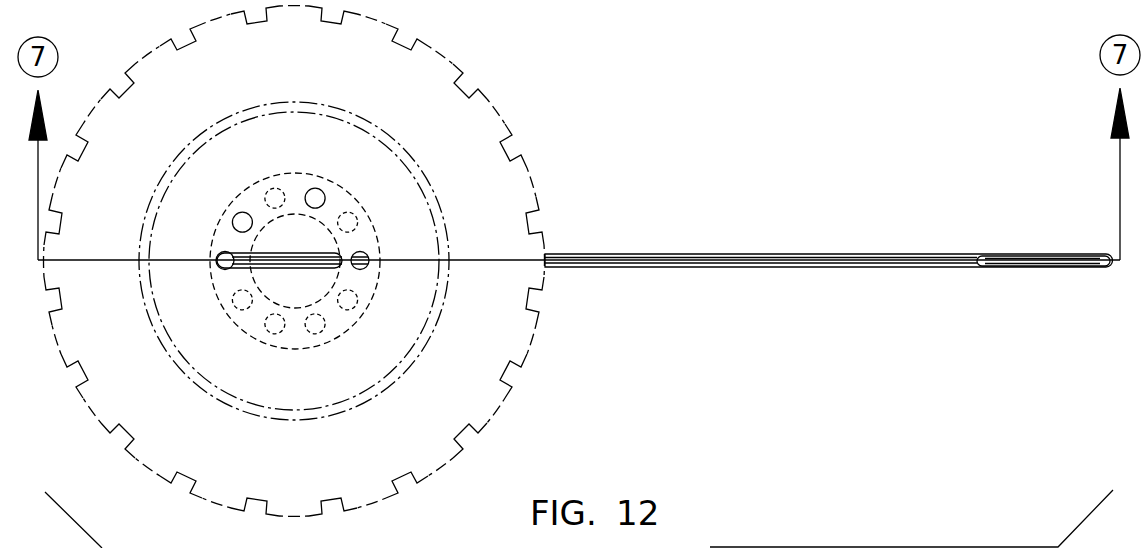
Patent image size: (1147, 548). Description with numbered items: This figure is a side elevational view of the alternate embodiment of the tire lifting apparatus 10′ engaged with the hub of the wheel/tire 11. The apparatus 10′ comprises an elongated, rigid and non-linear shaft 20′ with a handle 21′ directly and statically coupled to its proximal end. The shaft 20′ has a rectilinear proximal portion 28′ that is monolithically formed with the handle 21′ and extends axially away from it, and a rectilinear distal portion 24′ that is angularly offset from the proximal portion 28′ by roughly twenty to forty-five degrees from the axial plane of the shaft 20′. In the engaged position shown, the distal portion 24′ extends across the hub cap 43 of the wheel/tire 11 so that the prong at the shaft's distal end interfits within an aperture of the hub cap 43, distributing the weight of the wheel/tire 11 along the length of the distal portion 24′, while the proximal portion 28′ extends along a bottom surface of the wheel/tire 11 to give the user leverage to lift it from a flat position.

The tire lifting apparatus 10′ is at (579, 175).
The wheel/tire 11 is at (518, 198).
The hub cap 43 is at (258, 208).
The distal portion 24′ is at (383, 156).
The proximal portion 28′ is at (829, 315).
The shaft 20′ is at (761, 306).
The handle 21′ is at (1043, 211).